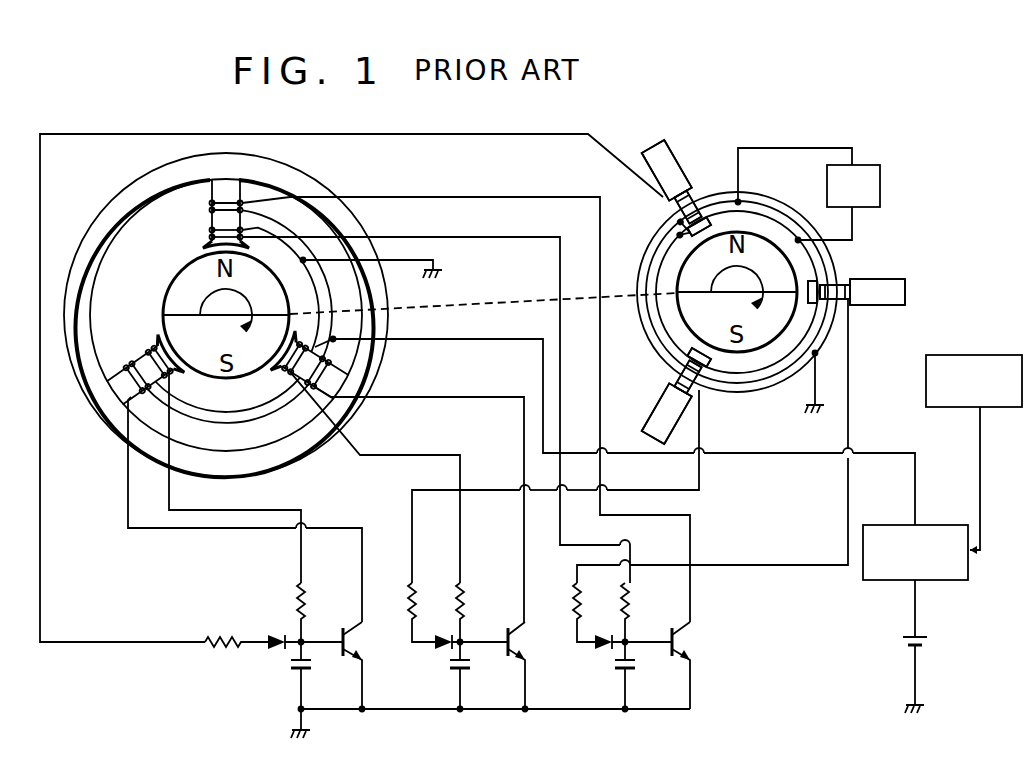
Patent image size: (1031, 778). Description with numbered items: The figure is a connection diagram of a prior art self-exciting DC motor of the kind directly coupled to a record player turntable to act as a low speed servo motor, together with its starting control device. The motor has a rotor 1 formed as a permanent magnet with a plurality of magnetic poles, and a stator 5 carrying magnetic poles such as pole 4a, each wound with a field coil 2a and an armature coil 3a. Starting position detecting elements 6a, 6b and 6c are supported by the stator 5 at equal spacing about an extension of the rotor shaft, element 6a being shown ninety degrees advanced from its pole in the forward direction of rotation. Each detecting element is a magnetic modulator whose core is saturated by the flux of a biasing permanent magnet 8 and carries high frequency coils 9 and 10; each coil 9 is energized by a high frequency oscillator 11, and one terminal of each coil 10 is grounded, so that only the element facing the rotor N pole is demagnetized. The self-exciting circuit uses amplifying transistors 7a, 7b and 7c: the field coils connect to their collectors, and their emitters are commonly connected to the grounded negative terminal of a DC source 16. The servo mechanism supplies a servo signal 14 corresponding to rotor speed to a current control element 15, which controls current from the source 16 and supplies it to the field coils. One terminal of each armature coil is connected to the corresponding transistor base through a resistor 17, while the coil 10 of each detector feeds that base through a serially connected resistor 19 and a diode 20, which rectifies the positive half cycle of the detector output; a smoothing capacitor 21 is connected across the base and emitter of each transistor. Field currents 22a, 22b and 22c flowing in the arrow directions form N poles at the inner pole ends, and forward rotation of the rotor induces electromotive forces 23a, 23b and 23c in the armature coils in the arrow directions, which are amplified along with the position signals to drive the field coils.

The rotor 1 is at (214, 376).
The field coil 2a is at (206, 210).
The armature coil 3a is at (206, 231).
The magnetic pole 4a is at (209, 249).
The stator 5 is at (117, 201).
The rotor angular position detecting element 6a is at (860, 277).
The rotor angular position detecting element 6b is at (670, 395).
The rotor angular position detecting element 6c is at (673, 185).
The amplifying transistor 7a is at (680, 665).
The amplifying transistor 7b is at (515, 665).
The amplifying transistor 7c is at (353, 665).
The biasing permanent magnet 8 is at (653, 150).
The high frequency coil 9 is at (700, 212).
The high frequency coil 10 is at (688, 205).
The high frequency oscillator 11 is at (880, 186).
The servo signal 14 is at (976, 454).
The current control element 15 is at (938, 555).
The DC source 16 is at (936, 646).
The resistor 17 is at (298, 596).
The resistor 19 is at (223, 635).
The diode 20 is at (273, 647).
The smoothing capacitor 21 is at (310, 668).
The field current 22a is at (708, 572).
The field current 22b is at (538, 530).
The field current 22c is at (375, 535).
The electromotive force 23a is at (435, 223).
The electromotive force 23b is at (442, 385).
The electromotive force 23c is at (210, 494).